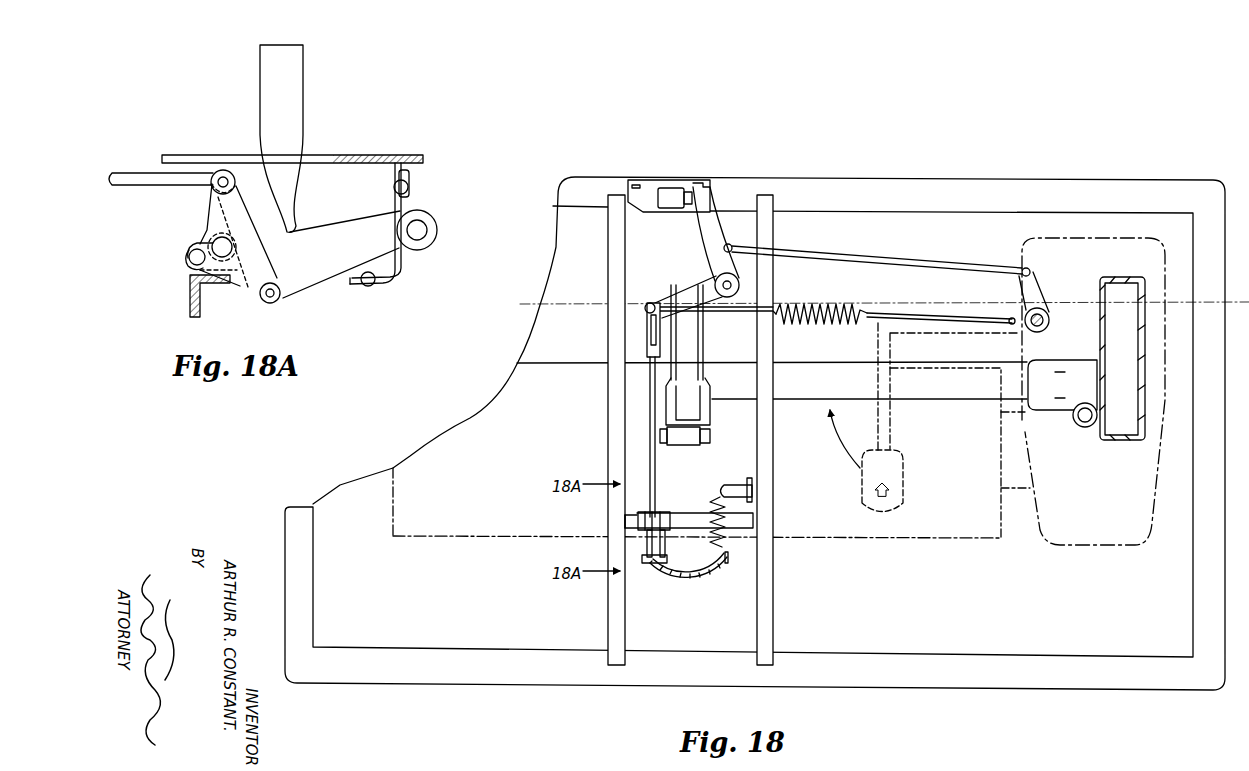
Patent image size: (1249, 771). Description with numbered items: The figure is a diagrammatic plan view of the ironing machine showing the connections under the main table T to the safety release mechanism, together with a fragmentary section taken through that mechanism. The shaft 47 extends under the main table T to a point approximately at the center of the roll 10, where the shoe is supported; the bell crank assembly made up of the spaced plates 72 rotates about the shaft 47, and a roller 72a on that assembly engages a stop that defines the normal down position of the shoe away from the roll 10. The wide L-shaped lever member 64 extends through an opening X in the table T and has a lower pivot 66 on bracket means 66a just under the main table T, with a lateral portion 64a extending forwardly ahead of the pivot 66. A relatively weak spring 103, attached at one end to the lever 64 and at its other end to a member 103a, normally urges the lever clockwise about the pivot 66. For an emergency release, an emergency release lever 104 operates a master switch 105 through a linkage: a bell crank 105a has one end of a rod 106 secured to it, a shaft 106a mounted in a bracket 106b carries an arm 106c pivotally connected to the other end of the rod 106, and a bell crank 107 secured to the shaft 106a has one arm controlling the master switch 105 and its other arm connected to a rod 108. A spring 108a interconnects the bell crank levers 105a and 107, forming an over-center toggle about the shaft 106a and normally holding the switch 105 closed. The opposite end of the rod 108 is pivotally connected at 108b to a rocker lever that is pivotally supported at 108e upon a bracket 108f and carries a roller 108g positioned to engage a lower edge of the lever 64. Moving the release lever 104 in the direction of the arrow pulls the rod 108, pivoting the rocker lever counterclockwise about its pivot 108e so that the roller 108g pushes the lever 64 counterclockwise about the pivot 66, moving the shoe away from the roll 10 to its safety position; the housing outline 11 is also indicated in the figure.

In FIG. 18, the roll 10 is at (950, 540).
In FIG. 18, the housing region 11 is at (1140, 525).
In FIG. 18, the shaft 47 is at (943, 397).
In FIG. 18A, the lever member 64 is at (298, 88).
In FIG. 18, the lever member 64 is at (718, 596).
In FIG. 18A, the lateral portion 64a is at (343, 230).
In FIG. 18A, the lower pivot 66 is at (420, 232).
In FIG. 18A, the bracket means 66a is at (405, 204).
In FIG. 18, the spaced plates of bell crank lever 72 is at (665, 420).
In FIG. 18, the roller 72a is at (687, 441).
In FIG. 18, the spring 103 is at (723, 542).
In FIG. 18, the member 103a is at (738, 485).
In FIG. 18, the emergency release lever 104 is at (895, 468).
In FIG. 18, the master switch 105 is at (672, 198).
In FIG. 18, the bell crank 105a is at (1033, 289).
In FIG. 18, the rod 106 is at (885, 255).
In FIG. 18, the shaft 106a is at (710, 282).
In FIG. 18, the bracket 106b is at (743, 283).
In FIG. 18, the arm 106c is at (740, 252).
In FIG. 18, the bell crank 107 is at (715, 226).
In FIG. 18A, the rod 108 is at (138, 185).
In FIG. 18, the rod 108 is at (650, 405).
In FIG. 18A, the spring 108a is at (207, 230).
In FIG. 18, the spring 108a is at (858, 312).
In FIG. 18A, the pivotal connection 108b is at (223, 176).
In FIG. 18, the pivotal connection 108b is at (652, 513).
In FIG. 18A, the pivot 108e is at (195, 256).
In FIG. 18A, the bracket 108f is at (192, 302).
In FIG. 18, the bracket 108f is at (743, 533).
In FIG. 18A, the roller 108g is at (257, 291).
In FIG. 18, the roller 108g is at (637, 577).
In FIG. 18A, the opening X is at (318, 158).
In FIG. 18A, the main table T is at (420, 158).